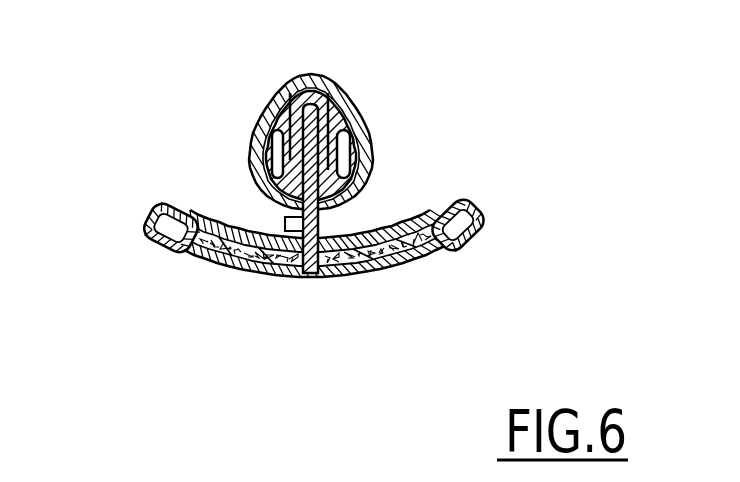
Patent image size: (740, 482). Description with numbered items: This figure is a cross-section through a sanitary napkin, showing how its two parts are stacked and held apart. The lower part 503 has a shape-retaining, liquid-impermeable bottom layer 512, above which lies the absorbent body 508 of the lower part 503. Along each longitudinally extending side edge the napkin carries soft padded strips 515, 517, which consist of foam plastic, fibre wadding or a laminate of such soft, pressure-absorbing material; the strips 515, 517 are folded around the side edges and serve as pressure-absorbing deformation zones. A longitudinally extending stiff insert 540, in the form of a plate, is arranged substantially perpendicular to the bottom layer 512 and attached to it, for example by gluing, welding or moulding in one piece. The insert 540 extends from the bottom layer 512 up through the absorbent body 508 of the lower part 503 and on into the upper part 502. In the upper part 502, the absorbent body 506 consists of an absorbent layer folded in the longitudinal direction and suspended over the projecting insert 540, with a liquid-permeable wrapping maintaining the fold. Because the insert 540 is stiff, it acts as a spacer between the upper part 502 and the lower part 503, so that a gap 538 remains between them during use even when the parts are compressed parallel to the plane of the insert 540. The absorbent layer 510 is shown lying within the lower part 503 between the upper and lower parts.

The upper part 502 is at (320, 73).
The stiff insert 540 is at (350, 101).
The absorbent body 506 is at (367, 130).
The cushion layer 510 is at (373, 226).
The padded strip 517 is at (475, 200).
The padded strip 515 is at (148, 212).
The gap 538 is at (287, 225).
The absorbent body 508 is at (223, 262).
The liquid-impermeable bottom layer 512 is at (280, 274).
The lower part 503 is at (418, 256).